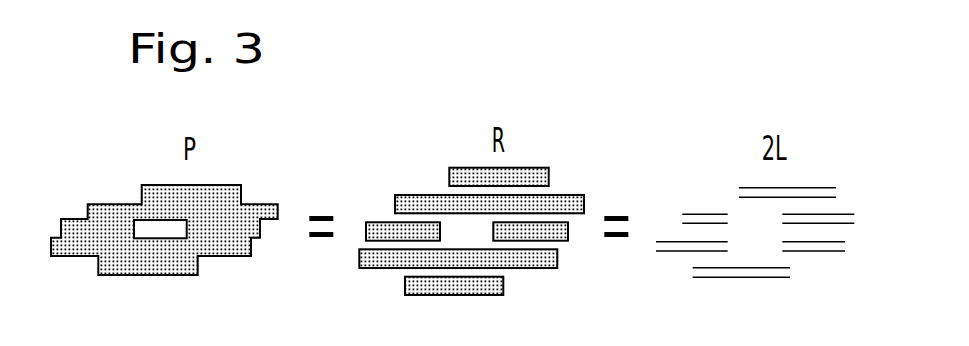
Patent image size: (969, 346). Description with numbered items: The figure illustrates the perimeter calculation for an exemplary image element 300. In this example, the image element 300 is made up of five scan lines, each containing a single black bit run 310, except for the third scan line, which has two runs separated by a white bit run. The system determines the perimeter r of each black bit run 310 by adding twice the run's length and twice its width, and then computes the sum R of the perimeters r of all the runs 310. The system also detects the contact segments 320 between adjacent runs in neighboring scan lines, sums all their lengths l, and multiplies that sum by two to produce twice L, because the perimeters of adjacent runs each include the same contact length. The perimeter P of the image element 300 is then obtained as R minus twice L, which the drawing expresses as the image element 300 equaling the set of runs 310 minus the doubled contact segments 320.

The image element 300 is at (116, 186).
The black bit run 310 is at (413, 182).
The contact segments 320 is at (700, 197).